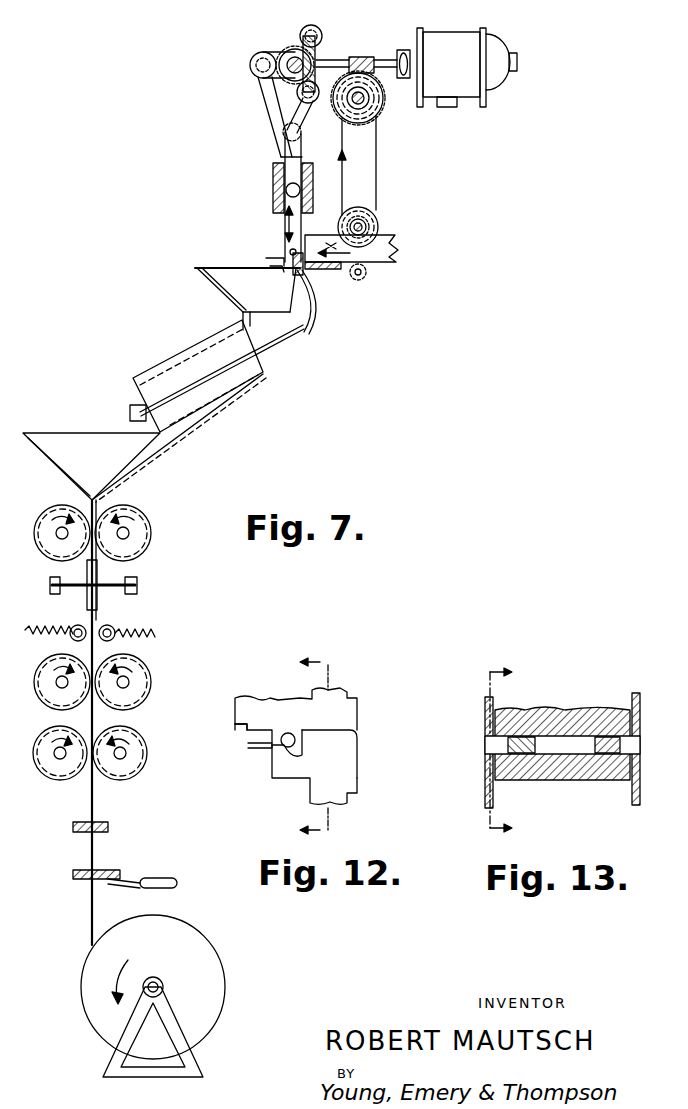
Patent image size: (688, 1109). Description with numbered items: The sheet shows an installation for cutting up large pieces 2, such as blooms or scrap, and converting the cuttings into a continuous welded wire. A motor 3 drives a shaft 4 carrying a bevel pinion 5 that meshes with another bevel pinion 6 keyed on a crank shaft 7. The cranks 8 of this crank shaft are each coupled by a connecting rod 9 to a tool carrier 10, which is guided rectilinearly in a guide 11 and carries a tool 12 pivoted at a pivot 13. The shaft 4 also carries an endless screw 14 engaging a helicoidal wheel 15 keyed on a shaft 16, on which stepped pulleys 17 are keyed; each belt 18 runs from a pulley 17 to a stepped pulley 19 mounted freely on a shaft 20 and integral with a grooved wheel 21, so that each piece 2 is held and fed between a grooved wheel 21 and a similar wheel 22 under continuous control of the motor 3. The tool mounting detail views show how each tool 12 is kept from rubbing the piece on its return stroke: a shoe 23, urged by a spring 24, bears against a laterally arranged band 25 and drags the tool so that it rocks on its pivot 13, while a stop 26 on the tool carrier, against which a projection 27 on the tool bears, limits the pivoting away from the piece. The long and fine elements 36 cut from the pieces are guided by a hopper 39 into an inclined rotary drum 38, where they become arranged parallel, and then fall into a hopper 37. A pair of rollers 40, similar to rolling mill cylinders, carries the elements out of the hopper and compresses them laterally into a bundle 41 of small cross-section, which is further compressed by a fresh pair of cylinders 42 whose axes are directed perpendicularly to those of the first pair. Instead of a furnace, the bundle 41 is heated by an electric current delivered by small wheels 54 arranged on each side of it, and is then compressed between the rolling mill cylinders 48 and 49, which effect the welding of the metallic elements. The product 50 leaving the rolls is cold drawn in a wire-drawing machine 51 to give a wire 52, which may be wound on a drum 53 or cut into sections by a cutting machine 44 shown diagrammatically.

In FIG. 7, the piece 2 is at (364, 255).
In FIG. 7, the motor 3 is at (450, 84).
In FIG. 7, the shaft 4 is at (382, 60).
In FIG. 7, the bevel pinion 5 is at (326, 60).
In FIG. 7, the bevel pinion 6 is at (287, 50).
In FIG. 7, the crank shaft 7 is at (306, 30).
In FIG. 7, the crank 8 is at (270, 56).
In FIG. 7, the connecting rod 9 is at (280, 118).
In FIG. 7, the tool carrier 10 is at (313, 190).
In FIG. 7, the guide 11 is at (313, 172).
In FIG. 7, the tool 12 is at (305, 300).
In FIG. 12, the tool 12 is at (357, 778).
In FIG. 13, the tool 12 is at (600, 775).
In FIG. 7, the pivot 13 is at (298, 246).
In FIG. 12, the pivot 13 is at (262, 766).
In FIG. 7, the endless screw 14 is at (363, 57).
In FIG. 7, the helicoidal wheel 15 is at (372, 120).
In FIG. 7, the shaft 16 is at (362, 104).
In FIG. 7, the stepped pulley 17 is at (378, 112).
In FIG. 7, the belt 18 is at (377, 182).
In FIG. 7, the stepped pulley 19 is at (378, 218).
In FIG. 7, the shaft 20 is at (370, 247).
In FIG. 7, the grooved wheel 21 is at (366, 232).
In FIG. 7, the grooved wheel 22 is at (360, 280).
In FIG. 7, the shoe 23 is at (306, 276).
In FIG. 12, the shoe 23 is at (325, 745).
In FIG. 13, the shoe 23 is at (490, 748).
In FIG. 13, the spring 24 is at (528, 754).
In FIG. 12, the band 25 is at (347, 693).
In FIG. 13, the band 25 is at (485, 718).
In FIG. 7, the stop 26 is at (280, 256).
In FIG. 12, the stop 26 is at (236, 722).
In FIG. 7, the projection 27 is at (275, 264).
In FIG. 12, the projection 27 is at (248, 745).
In FIG. 7, the long and fine element 36 is at (310, 328).
In FIG. 7, the hopper 37 is at (140, 454).
In FIG. 7, the inclined rotary drum 38 is at (222, 400).
In FIG. 7, the hopper 39 is at (222, 292).
In FIG. 7, the rollers 40 is at (42, 522).
In FIG. 7, the bundle 41 is at (100, 565).
In FIG. 7, the cylinders 42 is at (99, 598).
In FIG. 7, the cutting machine 44 is at (125, 886).
In FIG. 7, the rolling mill cylinders 48 is at (42, 676).
In FIG. 7, the rolling mill cylinders 49 is at (42, 746).
In FIG. 7, the product 50 is at (96, 800).
In FIG. 7, the wire-drawing machine 51 is at (108, 827).
In FIG. 7, the wire 52 is at (96, 850).
In FIG. 7, the drum 53 is at (205, 945).
In FIG. 7, the small wheels 54 is at (72, 626).